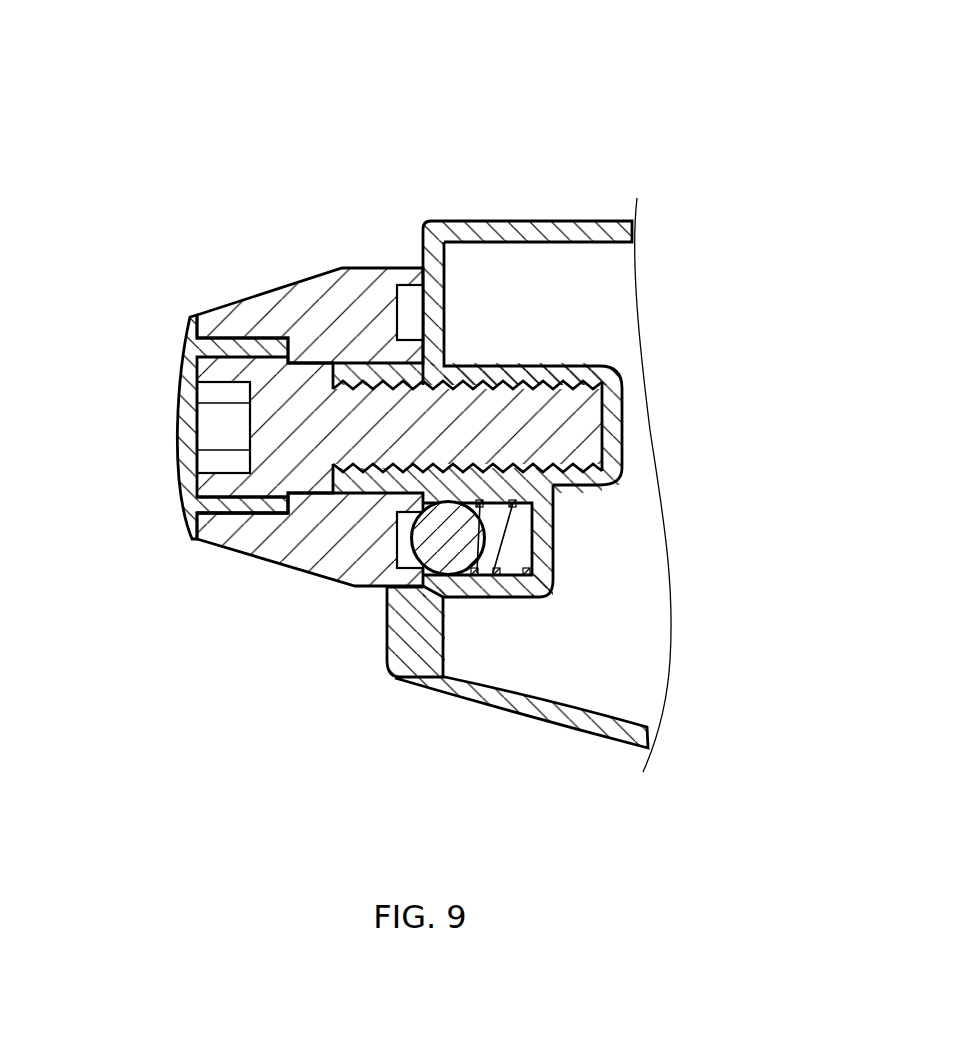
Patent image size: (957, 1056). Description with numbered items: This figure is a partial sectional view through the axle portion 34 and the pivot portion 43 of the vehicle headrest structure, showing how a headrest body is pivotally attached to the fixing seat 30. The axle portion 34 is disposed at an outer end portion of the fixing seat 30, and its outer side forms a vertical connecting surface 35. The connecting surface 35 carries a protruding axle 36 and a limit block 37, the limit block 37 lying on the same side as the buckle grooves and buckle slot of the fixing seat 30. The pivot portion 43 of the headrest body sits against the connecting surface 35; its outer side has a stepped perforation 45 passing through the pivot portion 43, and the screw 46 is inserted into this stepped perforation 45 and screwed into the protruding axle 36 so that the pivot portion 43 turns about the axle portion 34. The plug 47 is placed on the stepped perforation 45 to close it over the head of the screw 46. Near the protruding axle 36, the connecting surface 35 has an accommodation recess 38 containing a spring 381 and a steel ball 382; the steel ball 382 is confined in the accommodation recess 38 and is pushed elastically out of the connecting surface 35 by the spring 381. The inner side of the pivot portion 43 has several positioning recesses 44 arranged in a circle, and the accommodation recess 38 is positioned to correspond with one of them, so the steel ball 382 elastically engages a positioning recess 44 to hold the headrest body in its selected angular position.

The fixing seat 30 is at (592, 221).
The axle portion 34 is at (398, 245).
The connecting surface 35 is at (421, 229).
The protruding axle 36 is at (348, 483).
The limit block 37 is at (403, 632).
The accommodation recess 38 is at (523, 543).
The spring 381 is at (498, 580).
The steel ball 382 is at (452, 558).
The pivot portion 43 is at (287, 313).
The positioning recess 44 is at (407, 313).
The stepped perforation 45 is at (232, 518).
The screw 46 is at (505, 420).
The plug 47 is at (185, 420).